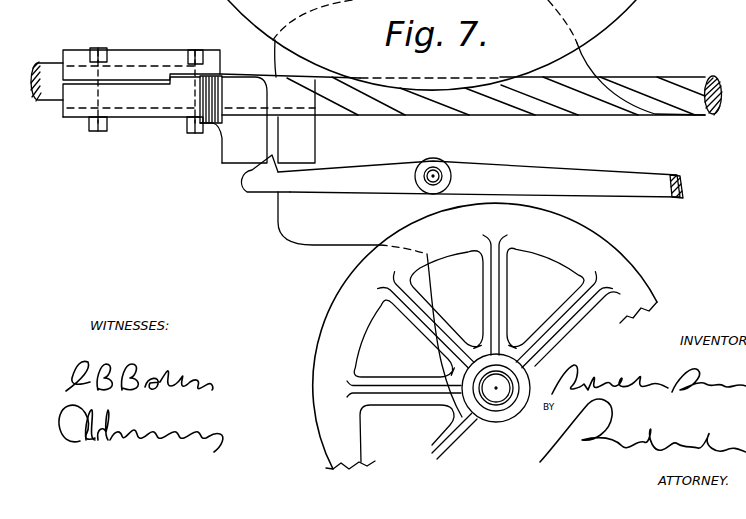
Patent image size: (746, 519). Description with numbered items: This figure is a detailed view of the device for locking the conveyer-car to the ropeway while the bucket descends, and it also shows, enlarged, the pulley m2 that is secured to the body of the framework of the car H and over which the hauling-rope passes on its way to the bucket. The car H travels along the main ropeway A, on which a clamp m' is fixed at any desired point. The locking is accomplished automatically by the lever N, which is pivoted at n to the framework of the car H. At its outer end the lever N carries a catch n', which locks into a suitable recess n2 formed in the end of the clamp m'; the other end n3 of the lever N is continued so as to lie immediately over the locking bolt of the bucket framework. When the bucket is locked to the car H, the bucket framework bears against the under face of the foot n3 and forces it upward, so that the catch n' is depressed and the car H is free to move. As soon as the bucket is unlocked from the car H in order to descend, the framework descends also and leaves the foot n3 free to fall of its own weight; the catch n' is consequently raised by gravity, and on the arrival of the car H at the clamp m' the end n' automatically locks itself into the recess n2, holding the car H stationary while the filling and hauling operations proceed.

The main ropeway A is at (700, 77).
The clamp m' is at (173, 78).
The recess n2 is at (215, 147).
The lever N is at (367, 182).
The catch n' is at (256, 189).
The pivot n is at (433, 168).
The foot n3 is at (682, 193).
The pulley m2 is at (337, 313).
The car H is at (493, 440).